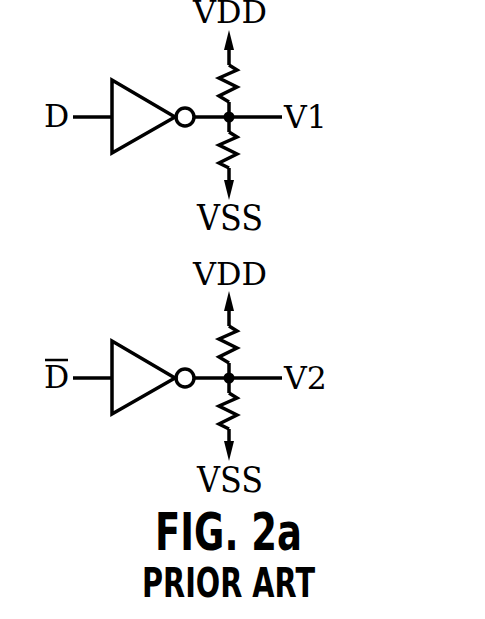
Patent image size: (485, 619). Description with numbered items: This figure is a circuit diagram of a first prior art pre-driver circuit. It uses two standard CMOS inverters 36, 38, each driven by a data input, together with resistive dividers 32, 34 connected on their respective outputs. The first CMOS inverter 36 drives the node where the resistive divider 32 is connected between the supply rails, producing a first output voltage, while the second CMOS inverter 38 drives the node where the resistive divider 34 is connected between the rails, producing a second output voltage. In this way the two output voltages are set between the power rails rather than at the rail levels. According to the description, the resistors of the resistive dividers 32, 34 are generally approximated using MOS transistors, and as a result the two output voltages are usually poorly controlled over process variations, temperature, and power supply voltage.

The resistive divider 32 is at (251, 98).
The resistive divider 34 is at (255, 376).
The CMOS inverter 36 is at (132, 91).
The CMOS inverter 38 is at (153, 354).